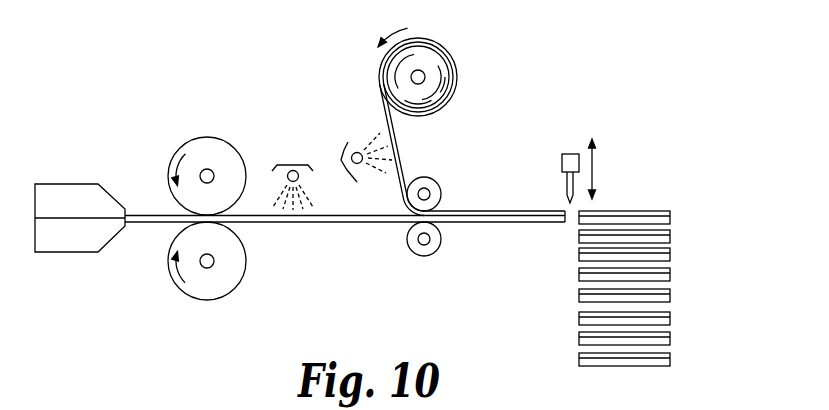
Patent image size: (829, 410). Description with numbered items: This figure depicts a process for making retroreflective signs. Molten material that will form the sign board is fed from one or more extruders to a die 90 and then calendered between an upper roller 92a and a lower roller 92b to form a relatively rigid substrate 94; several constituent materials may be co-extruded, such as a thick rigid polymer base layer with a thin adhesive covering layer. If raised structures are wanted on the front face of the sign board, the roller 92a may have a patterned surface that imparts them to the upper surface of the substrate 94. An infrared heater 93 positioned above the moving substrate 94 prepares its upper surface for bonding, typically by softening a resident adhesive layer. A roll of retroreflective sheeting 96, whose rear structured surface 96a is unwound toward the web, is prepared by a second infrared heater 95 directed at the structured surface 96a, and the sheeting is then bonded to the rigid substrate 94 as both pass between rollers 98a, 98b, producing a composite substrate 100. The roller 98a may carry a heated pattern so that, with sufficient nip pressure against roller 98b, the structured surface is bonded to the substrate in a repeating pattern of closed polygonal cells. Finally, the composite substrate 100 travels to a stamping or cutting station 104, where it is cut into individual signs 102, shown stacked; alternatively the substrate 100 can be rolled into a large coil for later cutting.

The die 90 is at (67, 190).
The roller 92a is at (210, 142).
The roller 92b is at (230, 280).
The infrared heater 93 is at (288, 164).
The rigid substrate 94 is at (329, 223).
The infrared heater 95 is at (341, 161).
The roll of retroreflective sheeting 96 is at (443, 43).
The rear structured surface 96a is at (382, 105).
The roller 98a is at (438, 185).
The roller 98b is at (425, 251).
The composite substrate 100 is at (497, 223).
The individual signs 102 is at (670, 238).
The stamping or cutting station 104 is at (612, 137).